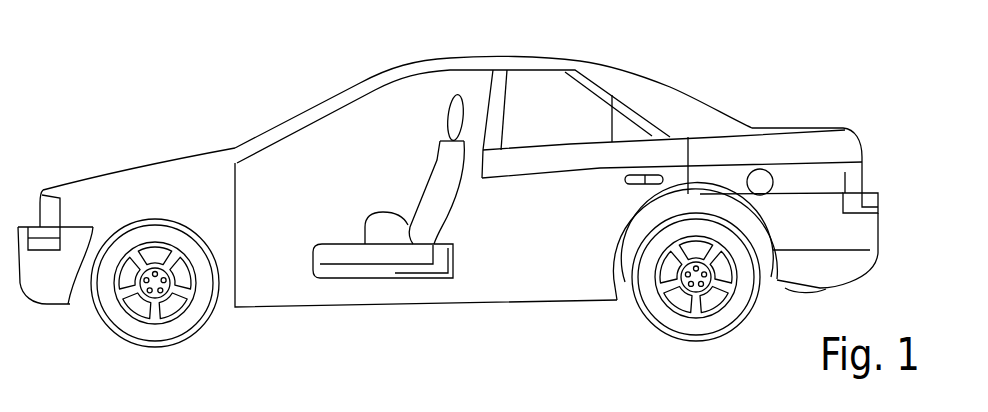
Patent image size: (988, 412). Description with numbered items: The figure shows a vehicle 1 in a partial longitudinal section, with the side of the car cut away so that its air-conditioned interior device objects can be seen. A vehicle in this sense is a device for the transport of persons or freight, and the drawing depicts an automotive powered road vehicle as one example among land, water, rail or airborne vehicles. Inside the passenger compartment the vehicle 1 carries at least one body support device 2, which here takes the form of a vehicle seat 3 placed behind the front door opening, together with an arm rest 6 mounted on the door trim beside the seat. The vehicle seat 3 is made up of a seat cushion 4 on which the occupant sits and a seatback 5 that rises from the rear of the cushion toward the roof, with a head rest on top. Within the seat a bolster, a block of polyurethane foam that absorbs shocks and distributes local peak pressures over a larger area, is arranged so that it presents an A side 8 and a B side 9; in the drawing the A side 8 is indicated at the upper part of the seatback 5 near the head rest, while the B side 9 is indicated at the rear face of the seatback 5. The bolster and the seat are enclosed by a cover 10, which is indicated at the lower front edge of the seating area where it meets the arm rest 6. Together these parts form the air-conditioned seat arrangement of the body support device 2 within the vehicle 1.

The vehicle 1 is at (448, 200).
The body support device 2 is at (403, 126).
The vehicle seat 3 is at (403, 126).
The seat cushion 4 is at (292, 205).
The seatback 5 is at (502, 150).
The arm rest 6 is at (372, 213).
The A side 8 is at (487, 126).
The B side 9 is at (455, 195).
The cover 10 is at (337, 242).